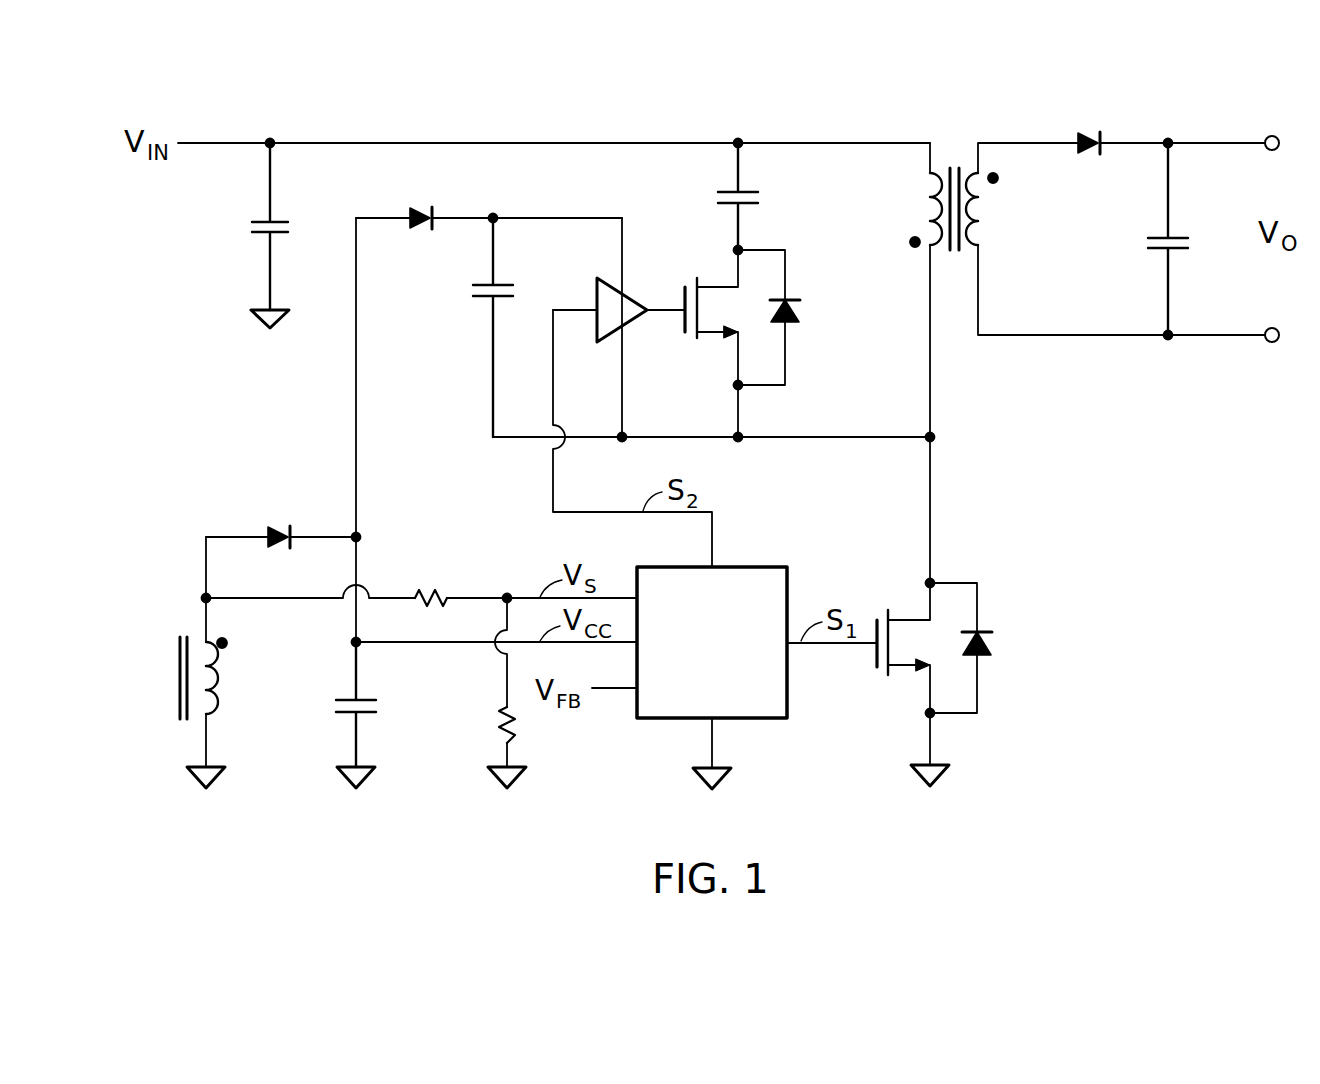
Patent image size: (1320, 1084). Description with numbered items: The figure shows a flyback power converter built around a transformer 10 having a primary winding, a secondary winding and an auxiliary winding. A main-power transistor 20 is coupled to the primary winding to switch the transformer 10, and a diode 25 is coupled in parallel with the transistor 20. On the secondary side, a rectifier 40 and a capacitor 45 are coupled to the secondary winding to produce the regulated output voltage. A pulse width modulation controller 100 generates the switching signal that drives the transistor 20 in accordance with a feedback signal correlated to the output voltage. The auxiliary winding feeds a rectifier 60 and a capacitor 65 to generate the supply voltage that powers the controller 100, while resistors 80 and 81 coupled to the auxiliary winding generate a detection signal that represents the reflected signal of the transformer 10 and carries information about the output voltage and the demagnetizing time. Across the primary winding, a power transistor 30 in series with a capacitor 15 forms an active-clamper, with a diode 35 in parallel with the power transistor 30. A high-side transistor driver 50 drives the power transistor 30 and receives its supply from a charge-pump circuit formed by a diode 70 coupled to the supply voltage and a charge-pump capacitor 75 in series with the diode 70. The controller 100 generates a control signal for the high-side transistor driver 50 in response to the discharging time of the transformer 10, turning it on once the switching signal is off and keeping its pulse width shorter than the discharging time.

The transformer 10 is at (952, 147).
The capacitor 15 is at (748, 183).
The transistor 20 is at (906, 605).
The diode 25 is at (988, 628).
The power transistor 30 is at (713, 271).
The diode 35 is at (799, 288).
The rectifier 40 is at (1090, 127).
The capacitor 45 is at (1178, 233).
The high-side transistor driver 50 is at (590, 296).
The rectifier 60 is at (280, 520).
The capacitor 65 is at (366, 693).
The diode 70 is at (421, 207).
The capacitor 75 is at (487, 281).
The resistor 80 is at (428, 580).
The resistor 81 is at (489, 729).
The PWM controller 100 is at (753, 567).